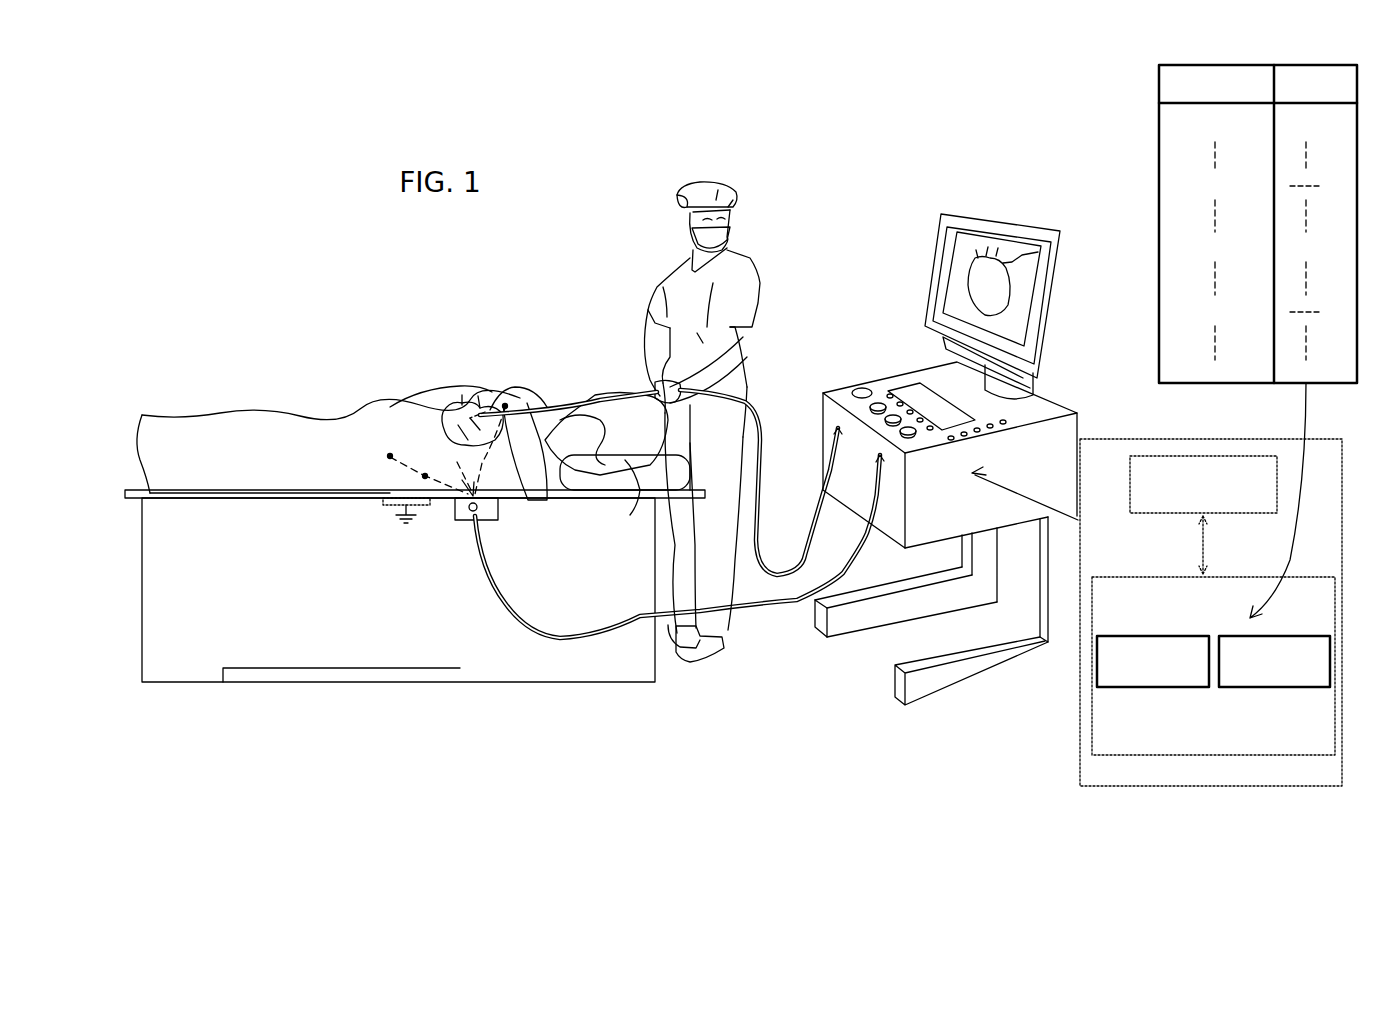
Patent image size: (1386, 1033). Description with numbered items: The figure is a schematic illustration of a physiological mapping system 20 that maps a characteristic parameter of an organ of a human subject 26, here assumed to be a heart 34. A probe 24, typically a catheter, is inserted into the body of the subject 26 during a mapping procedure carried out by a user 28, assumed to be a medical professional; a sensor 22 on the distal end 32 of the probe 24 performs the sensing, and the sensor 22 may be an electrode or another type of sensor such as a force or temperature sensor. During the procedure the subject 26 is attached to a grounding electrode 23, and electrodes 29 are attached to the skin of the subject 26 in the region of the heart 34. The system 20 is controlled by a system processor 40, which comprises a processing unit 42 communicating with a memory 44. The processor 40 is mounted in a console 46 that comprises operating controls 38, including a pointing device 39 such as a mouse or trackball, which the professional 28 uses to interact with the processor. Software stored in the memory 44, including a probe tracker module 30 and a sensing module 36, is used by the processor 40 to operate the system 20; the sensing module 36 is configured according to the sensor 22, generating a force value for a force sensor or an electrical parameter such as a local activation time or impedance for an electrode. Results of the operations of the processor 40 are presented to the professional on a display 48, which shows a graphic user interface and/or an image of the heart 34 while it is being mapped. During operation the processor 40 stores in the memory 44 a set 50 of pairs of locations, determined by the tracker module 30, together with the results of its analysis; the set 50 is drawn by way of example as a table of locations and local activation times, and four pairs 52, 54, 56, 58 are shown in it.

The physiological mapping system 20 is at (939, 411).
The sensor 22 is at (528, 403).
The grounding electrode 23 is at (382, 508).
The probe 24 is at (656, 440).
The human subject 26 is at (629, 500).
The user 28 is at (675, 298).
The electrodes 29 is at (425, 475).
The probe tracker module 30 is at (1097, 680).
The distal end 32 is at (462, 412).
The heart 34 is at (487, 409).
The sensing module 36 is at (1285, 687).
The operating controls 38 is at (939, 462).
The pointing device 39 is at (856, 390).
The system processor 40 is at (1157, 620).
The processing unit 42 is at (1145, 457).
The memory 44 is at (1159, 689).
The console 46 is at (897, 384).
The display 48 is at (987, 218).
The set of pairs of locations 50 is at (1224, 340).
The pair 52 is at (1157, 128).
The pair 54 is at (1157, 186).
The pair 56 is at (1157, 248).
The pair 58 is at (1157, 312).